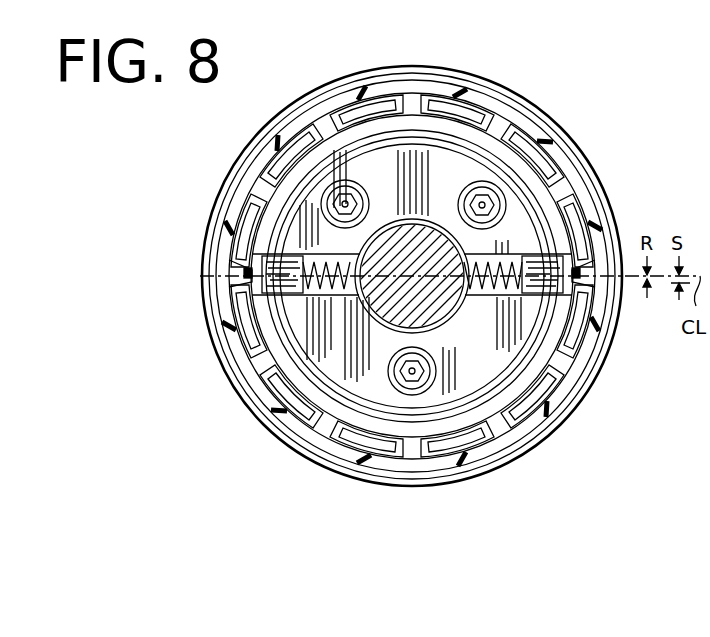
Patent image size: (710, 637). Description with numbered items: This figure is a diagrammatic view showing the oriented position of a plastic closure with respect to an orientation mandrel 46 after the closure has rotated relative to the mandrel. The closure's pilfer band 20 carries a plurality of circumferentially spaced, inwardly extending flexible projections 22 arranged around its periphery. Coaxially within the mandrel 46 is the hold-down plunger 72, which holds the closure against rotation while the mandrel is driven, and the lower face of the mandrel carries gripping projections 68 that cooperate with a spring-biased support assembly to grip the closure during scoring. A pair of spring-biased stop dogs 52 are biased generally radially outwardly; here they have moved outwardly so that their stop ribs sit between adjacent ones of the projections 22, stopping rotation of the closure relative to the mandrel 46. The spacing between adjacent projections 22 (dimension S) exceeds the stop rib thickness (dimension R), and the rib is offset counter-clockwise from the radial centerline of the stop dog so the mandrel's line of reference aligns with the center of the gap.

The pilfer band 20 is at (497, 447).
The flexible projections 22 is at (586, 210).
The orientation mandrel 46 is at (470, 150).
The spring-biased stop dogs 52 is at (271, 283).
The gripping projections 68 is at (387, 176).
The hold-down plunger 72 is at (410, 242).